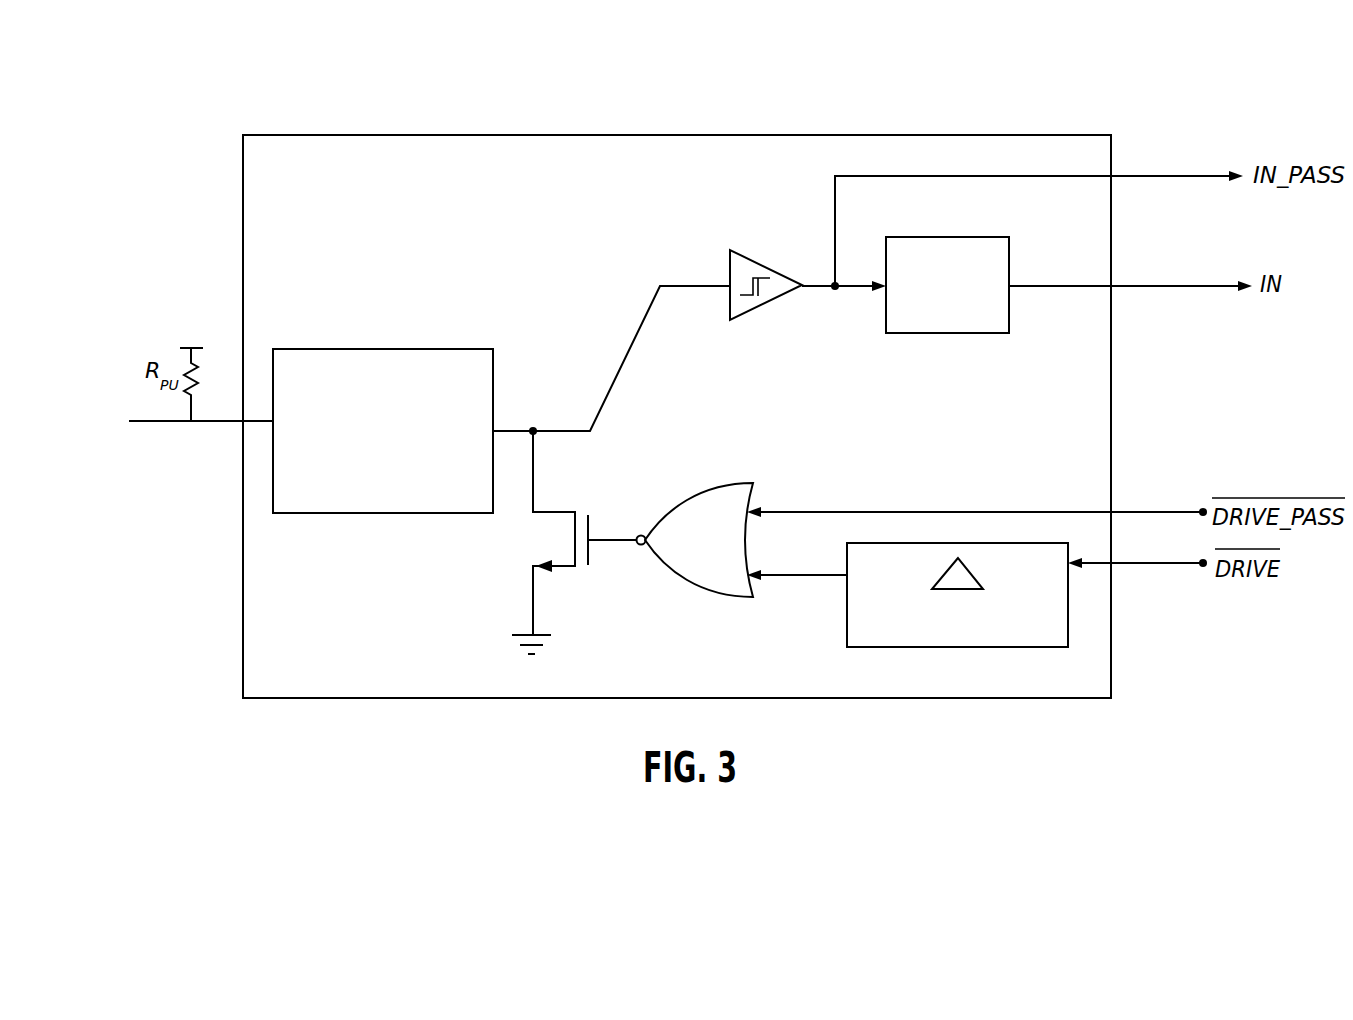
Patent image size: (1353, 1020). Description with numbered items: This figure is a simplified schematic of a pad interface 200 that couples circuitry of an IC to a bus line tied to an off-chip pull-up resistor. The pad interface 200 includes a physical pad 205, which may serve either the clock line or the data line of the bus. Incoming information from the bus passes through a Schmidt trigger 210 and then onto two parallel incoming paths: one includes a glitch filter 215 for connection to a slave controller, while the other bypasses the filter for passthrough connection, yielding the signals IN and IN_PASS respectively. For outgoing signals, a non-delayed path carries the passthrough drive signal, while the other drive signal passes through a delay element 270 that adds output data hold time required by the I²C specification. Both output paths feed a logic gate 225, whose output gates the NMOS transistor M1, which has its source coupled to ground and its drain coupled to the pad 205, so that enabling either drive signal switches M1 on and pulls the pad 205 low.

The pad interface 200 is at (142, 147).
The physical pad 205 is at (383, 407).
The Schmidt trigger 210 is at (741, 273).
The glitch filter 215 is at (935, 315).
The logic gate 225 is at (686, 565).
The delay element 270 is at (957, 618).
The NMOS transistor M1 is at (571, 542).